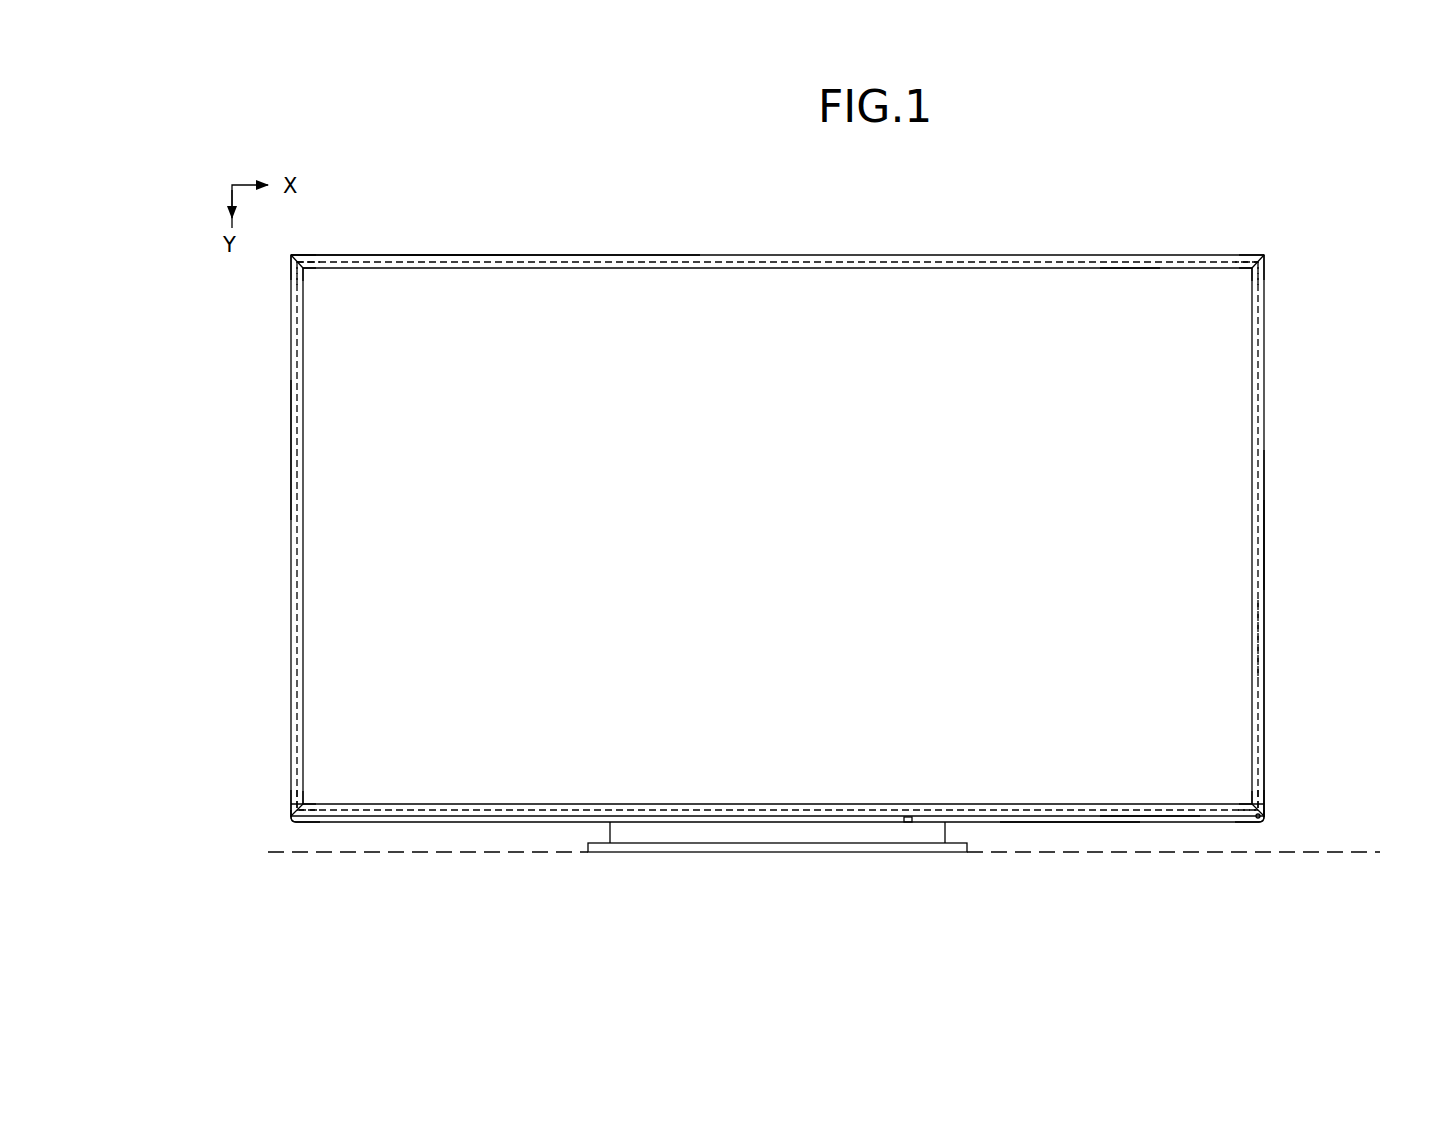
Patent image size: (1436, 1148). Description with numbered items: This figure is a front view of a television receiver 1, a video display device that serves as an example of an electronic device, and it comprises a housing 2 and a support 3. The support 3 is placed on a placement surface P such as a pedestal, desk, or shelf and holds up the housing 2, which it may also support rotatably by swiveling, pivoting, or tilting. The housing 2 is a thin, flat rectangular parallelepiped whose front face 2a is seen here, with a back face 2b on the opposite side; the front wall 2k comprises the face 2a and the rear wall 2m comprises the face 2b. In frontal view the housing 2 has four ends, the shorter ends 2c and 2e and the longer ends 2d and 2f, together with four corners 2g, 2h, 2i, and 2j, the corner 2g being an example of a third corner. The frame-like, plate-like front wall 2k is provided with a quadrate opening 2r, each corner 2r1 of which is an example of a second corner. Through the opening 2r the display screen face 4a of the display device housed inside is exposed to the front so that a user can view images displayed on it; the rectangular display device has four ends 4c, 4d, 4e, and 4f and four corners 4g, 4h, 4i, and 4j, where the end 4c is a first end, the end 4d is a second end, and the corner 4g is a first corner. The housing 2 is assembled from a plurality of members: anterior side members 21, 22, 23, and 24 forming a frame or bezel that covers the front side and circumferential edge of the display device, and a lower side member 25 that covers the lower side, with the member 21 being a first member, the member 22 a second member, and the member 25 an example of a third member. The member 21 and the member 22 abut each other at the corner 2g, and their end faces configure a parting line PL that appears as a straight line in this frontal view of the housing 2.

The television receiver 1 is at (1097, 218).
The housing 2 is at (1012, 252).
The face 2a is at (780, 255).
The wall 2k is at (777, 261).
The face 2b is at (1240, 433).
The wall 2m is at (1258, 536).
The end 2c is at (291, 566).
The end 2d is at (537, 823).
The end 2e is at (1266, 583).
The end 2f is at (642, 255).
The corner 2g is at (293, 816).
The corner 2h is at (1264, 818).
The corner 2i is at (1262, 255).
The corner 2j is at (291, 255).
The opening 2r is at (1114, 262).
The corner 2r1 is at (304, 268).
The support 3 is at (878, 856).
The face 4a is at (1220, 698).
The end 4c is at (297, 620).
The end 4d is at (408, 812).
The end 4e is at (1260, 636).
The end 4f is at (903, 262).
The corner 4g is at (293, 805).
The corner 4h is at (1262, 805).
The corner 4i is at (1267, 263).
The corner 4j is at (291, 266).
The member 21 is at (286, 452).
The member 22 is at (1146, 822).
The member 23 is at (1270, 522).
The member 24 is at (456, 252).
The member 25 is at (1072, 827).
The parting line PL is at (290, 266).
The placement surface P is at (1376, 850).